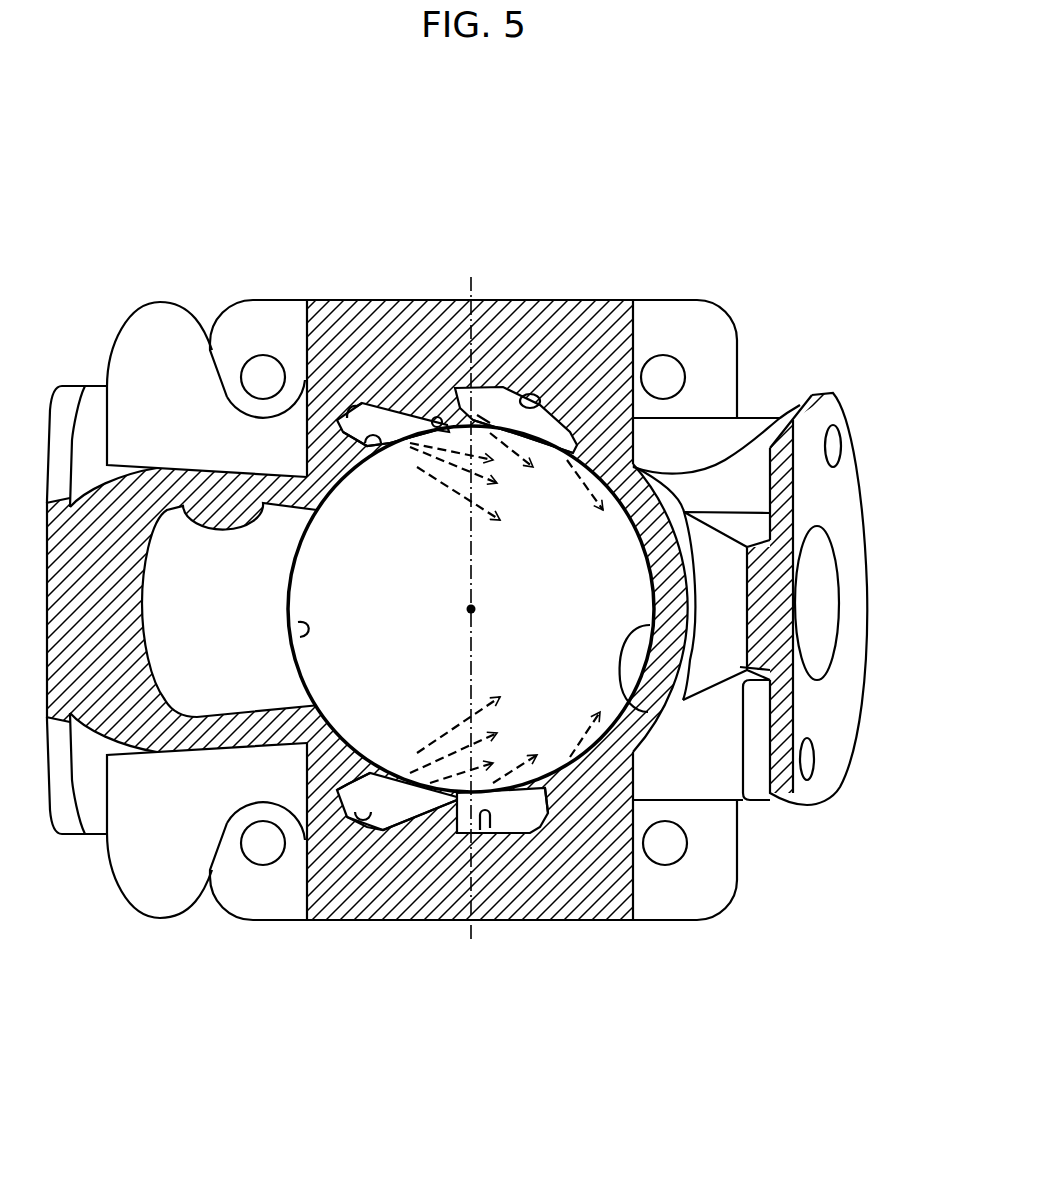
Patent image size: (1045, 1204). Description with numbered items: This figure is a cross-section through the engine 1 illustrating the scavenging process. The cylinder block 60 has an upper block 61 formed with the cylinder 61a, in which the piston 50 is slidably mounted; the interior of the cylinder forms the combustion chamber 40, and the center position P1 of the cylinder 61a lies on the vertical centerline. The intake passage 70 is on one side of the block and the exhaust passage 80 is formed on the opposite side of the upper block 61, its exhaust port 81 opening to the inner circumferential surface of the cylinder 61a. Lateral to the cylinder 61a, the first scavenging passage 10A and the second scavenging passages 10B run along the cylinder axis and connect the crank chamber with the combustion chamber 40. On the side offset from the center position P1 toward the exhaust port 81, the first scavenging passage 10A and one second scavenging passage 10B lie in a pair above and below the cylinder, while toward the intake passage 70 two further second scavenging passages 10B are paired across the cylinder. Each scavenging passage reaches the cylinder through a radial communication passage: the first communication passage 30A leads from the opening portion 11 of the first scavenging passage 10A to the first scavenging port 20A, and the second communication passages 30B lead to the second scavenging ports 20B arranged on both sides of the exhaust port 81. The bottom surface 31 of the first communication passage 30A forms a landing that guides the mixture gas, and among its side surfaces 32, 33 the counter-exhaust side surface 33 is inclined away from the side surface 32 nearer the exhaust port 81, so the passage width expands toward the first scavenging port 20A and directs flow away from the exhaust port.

The engine 1 is at (185, 185).
The first scavenging passage 10A is at (351, 349).
The second scavenging passage 10B is at (479, 641).
The opening portion 11 is at (300, 420).
The first scavenging port 20A is at (402, 447).
The second scavenging port 20B is at (553, 457).
The first communication passage 30A is at (412, 406).
The second communication passage 30B is at (530, 390).
The bottom surface 31 is at (383, 400).
The side surface 32 is at (383, 452).
The side surface 33 is at (425, 414).
The combustion chamber 40 is at (516, 566).
The center position P1 is at (475, 609).
The piston 50 is at (744, 440).
The cylinder block 60 is at (495, 639).
The upper block 61 is at (640, 900).
The cylinder 61a is at (700, 800).
The intake passage 70 is at (832, 583).
The exhaust passage 80 is at (184, 506).
The exhaust port 81 is at (293, 641).